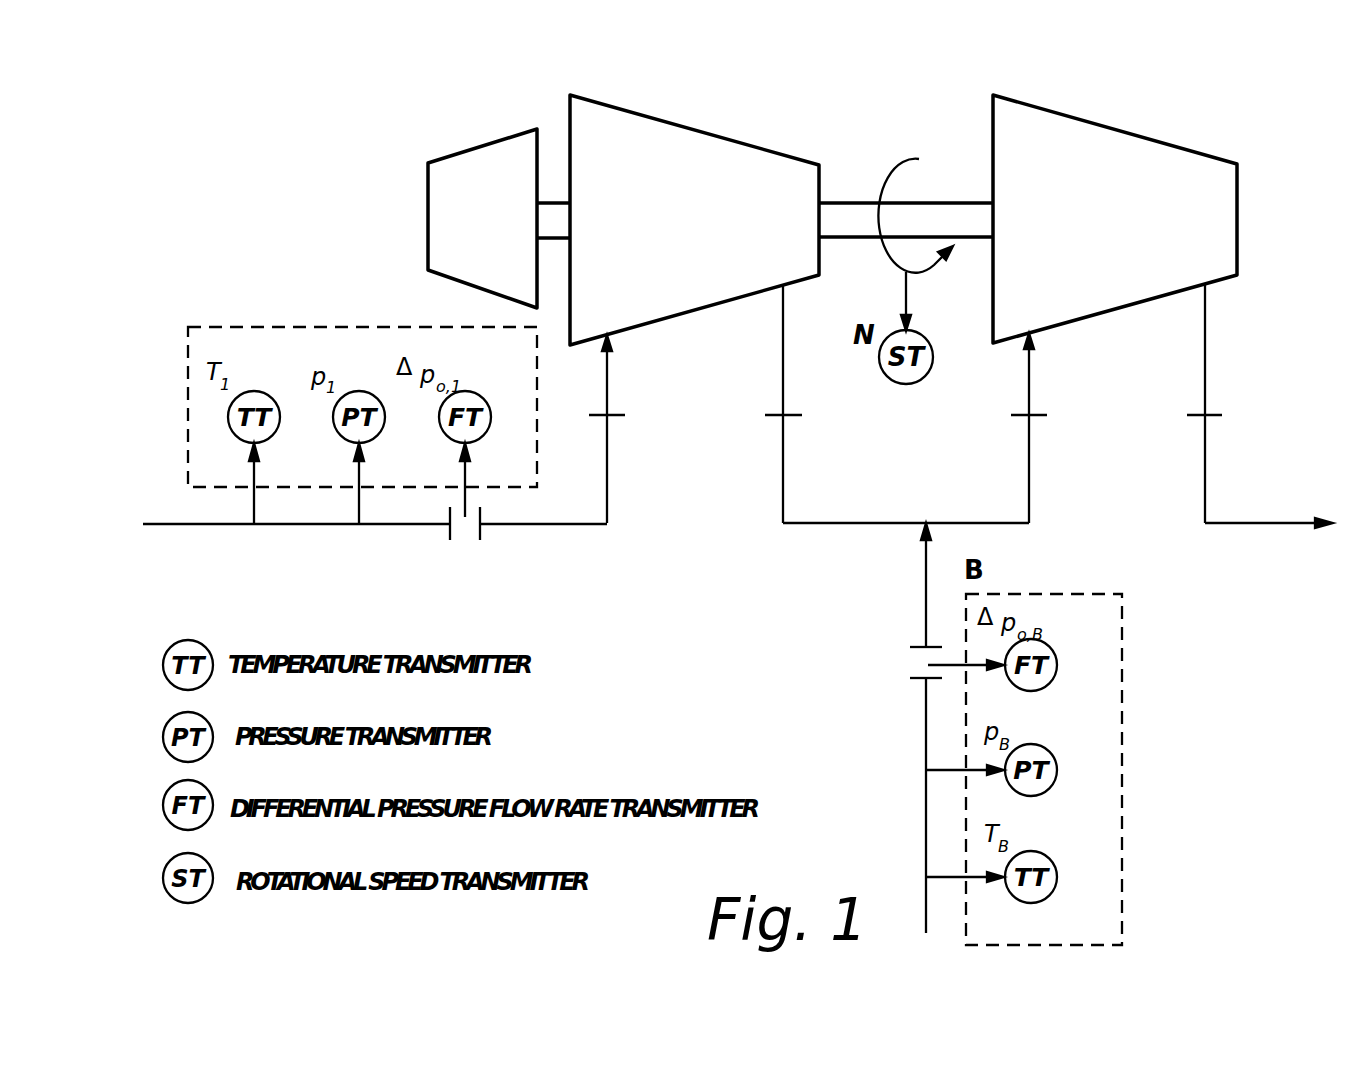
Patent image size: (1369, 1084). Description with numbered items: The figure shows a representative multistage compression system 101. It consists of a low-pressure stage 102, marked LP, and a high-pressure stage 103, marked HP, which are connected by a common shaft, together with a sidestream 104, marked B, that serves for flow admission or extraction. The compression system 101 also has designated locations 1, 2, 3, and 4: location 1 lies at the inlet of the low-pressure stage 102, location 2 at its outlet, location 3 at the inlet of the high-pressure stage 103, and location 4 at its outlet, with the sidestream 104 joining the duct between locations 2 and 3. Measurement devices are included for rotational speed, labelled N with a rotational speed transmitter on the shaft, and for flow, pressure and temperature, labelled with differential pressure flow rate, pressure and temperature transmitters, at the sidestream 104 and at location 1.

The designated location 1 is at (622, 429).
The designated location 2 is at (897, 404).
The designated location 3 is at (1043, 428).
The designated location 4 is at (1260, 406).
The multistage compression system 101 is at (906, 220).
The low-pressure stage 102 is at (694, 220).
The high-pressure stage 103 is at (1115, 219).
The sidestream 104 is at (889, 728).